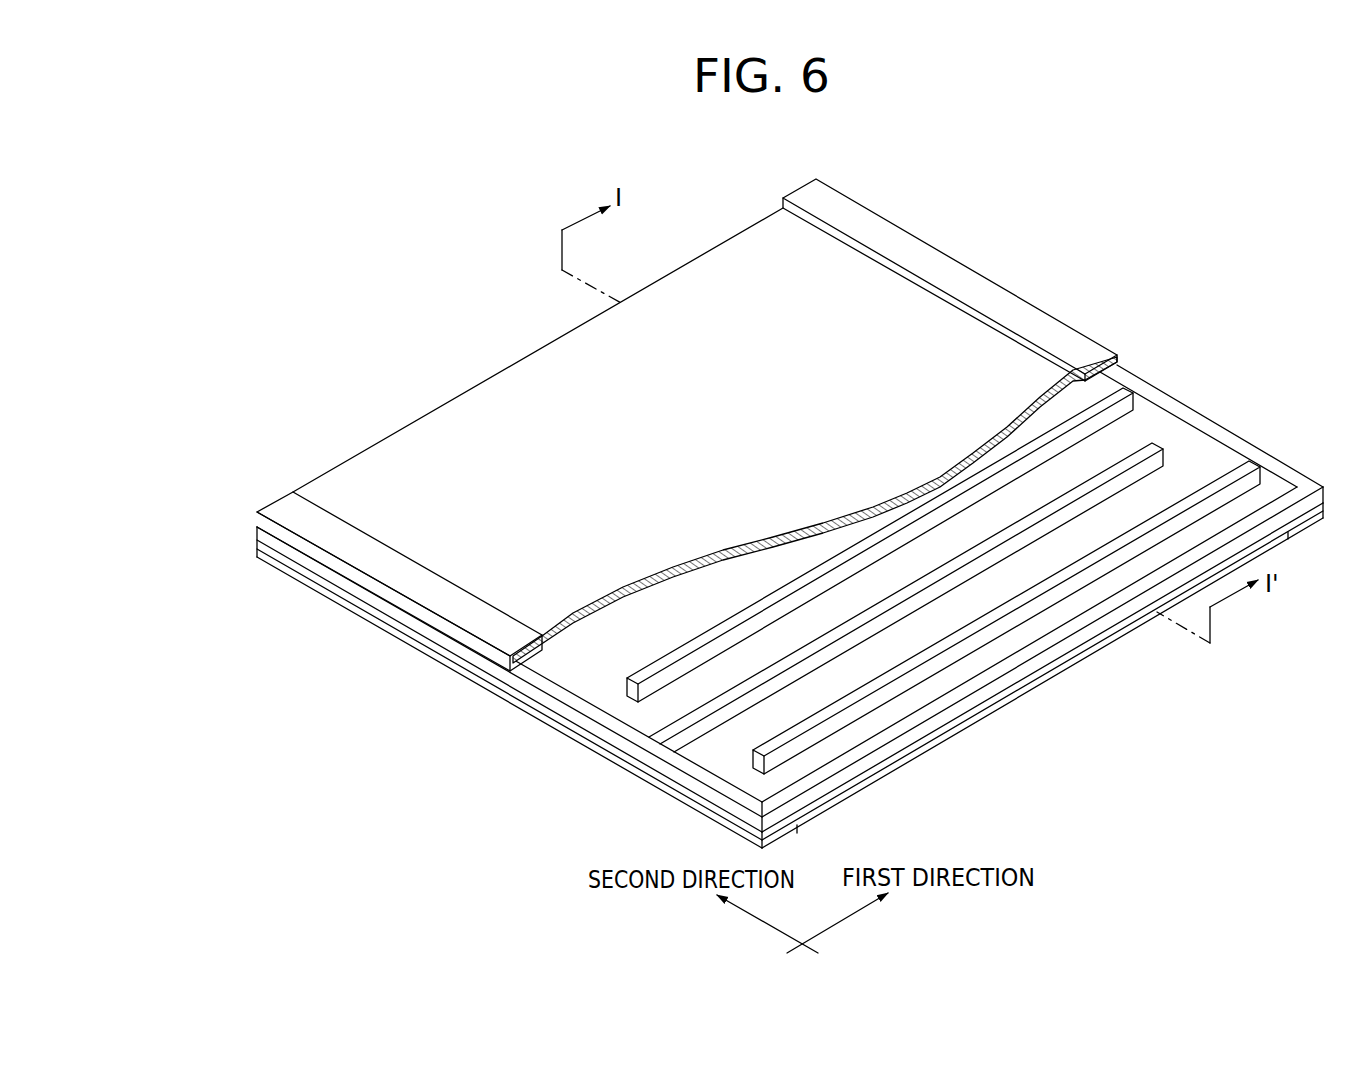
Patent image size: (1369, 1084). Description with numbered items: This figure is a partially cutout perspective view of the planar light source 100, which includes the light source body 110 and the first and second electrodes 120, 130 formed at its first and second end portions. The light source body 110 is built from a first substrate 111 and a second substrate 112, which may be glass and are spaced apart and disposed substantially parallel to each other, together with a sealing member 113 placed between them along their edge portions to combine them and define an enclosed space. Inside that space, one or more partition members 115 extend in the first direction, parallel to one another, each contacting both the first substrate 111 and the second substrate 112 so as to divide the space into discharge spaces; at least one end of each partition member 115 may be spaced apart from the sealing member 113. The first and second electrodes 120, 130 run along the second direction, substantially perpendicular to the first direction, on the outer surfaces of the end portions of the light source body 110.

The planar light source 100 is at (958, 138).
The light source body 110 is at (148, 455).
The first substrate 111 is at (257, 549).
The second substrate 112 is at (317, 493).
The sealing member 113 is at (257, 538).
The partition members 115 is at (810, 738).
The first electrode 120 is at (407, 585).
The second electrode 130 is at (950, 268).